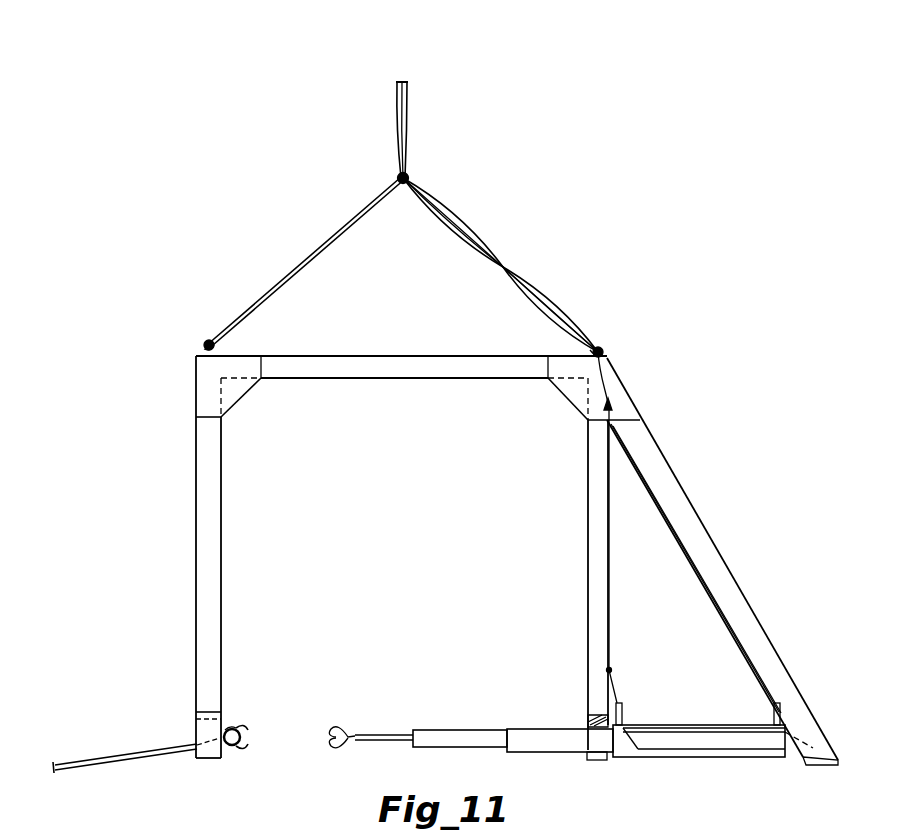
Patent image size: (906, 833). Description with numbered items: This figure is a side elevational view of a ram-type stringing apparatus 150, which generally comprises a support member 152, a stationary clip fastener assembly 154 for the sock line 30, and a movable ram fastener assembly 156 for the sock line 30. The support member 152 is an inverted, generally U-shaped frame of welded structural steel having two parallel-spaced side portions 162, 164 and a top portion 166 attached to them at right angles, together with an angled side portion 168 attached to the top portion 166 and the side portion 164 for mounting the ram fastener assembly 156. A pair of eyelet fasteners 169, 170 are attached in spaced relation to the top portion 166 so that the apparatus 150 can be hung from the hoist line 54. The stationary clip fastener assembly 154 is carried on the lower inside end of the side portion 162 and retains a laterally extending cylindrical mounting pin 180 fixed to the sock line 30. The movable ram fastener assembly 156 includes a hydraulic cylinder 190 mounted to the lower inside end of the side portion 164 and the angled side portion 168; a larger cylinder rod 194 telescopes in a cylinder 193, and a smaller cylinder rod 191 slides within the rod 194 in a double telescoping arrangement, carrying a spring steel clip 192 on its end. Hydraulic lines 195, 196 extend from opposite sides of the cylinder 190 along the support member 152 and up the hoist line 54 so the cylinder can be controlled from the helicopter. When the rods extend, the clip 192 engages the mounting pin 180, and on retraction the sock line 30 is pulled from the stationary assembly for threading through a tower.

The hoist line 54 is at (408, 153).
The eyelet fastener 170 is at (208, 344).
The top portion 166 is at (400, 357).
The eyelet fastener 169 is at (600, 350).
The ram-type stringing apparatus 150 is at (692, 380).
The side portion 162 is at (213, 540).
The support member 152 is at (195, 598).
The side portion 164 is at (597, 557).
The angled side portion 168 is at (722, 580).
The hydraulic line 195 is at (609, 670).
The hydraulic line 196 is at (748, 672).
The hydraulic cylinder 190 is at (673, 757).
The spring steel clip 192 is at (344, 722).
The cylinder rod 191 is at (364, 740).
The cylinder rod 194 is at (460, 732).
The cylinder 193 is at (548, 736).
The movable ram fastener assembly 156 is at (366, 778).
The sock line 30 is at (125, 758).
The stationary clip fastener assembly 154 is at (235, 760).
The mounting pin 180 is at (243, 737).